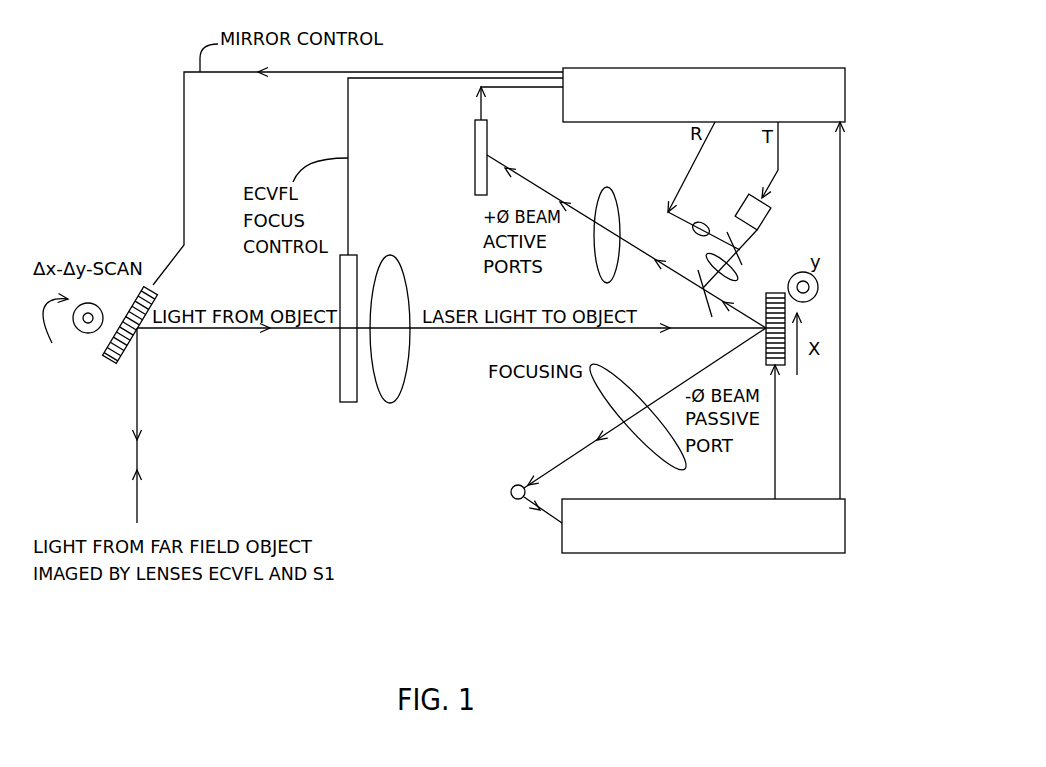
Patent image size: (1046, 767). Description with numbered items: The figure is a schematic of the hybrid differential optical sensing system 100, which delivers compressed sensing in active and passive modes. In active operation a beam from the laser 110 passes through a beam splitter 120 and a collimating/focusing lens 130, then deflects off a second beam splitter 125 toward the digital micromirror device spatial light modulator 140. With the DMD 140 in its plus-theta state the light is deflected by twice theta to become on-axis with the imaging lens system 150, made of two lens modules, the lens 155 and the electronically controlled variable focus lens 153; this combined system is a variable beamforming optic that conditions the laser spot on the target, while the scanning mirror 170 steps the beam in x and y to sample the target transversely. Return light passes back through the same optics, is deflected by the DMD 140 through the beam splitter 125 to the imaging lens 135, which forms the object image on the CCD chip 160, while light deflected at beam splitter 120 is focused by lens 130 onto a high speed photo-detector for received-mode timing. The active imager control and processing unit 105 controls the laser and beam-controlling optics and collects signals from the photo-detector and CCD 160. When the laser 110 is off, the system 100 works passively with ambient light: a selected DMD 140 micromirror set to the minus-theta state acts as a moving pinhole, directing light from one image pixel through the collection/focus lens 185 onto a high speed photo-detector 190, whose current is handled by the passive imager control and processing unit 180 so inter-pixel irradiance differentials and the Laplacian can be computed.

The sensing system 100 is at (135, 100).
The active imager control and processing unit 105 is at (746, 68).
The laser 110 is at (771, 216).
The beam splitter 120 is at (742, 260).
The beam splitter 125 is at (703, 306).
The collimating/focusing lens 130 is at (705, 257).
The imaging lens 135 is at (618, 192).
The digital micromirror device spatial light modulator 140 is at (782, 365).
The imaging lens system 150 is at (354, 343).
The electronically controlled variable focus lens 153 is at (338, 368).
The lens 155 is at (402, 277).
The CCD chip 160 is at (475, 170).
The scanning mirror 170 is at (102, 356).
The passive imager control and processing unit 180 is at (722, 553).
The collection/focus lens 185 is at (597, 393).
The high speed photo-detector 190 is at (511, 493).